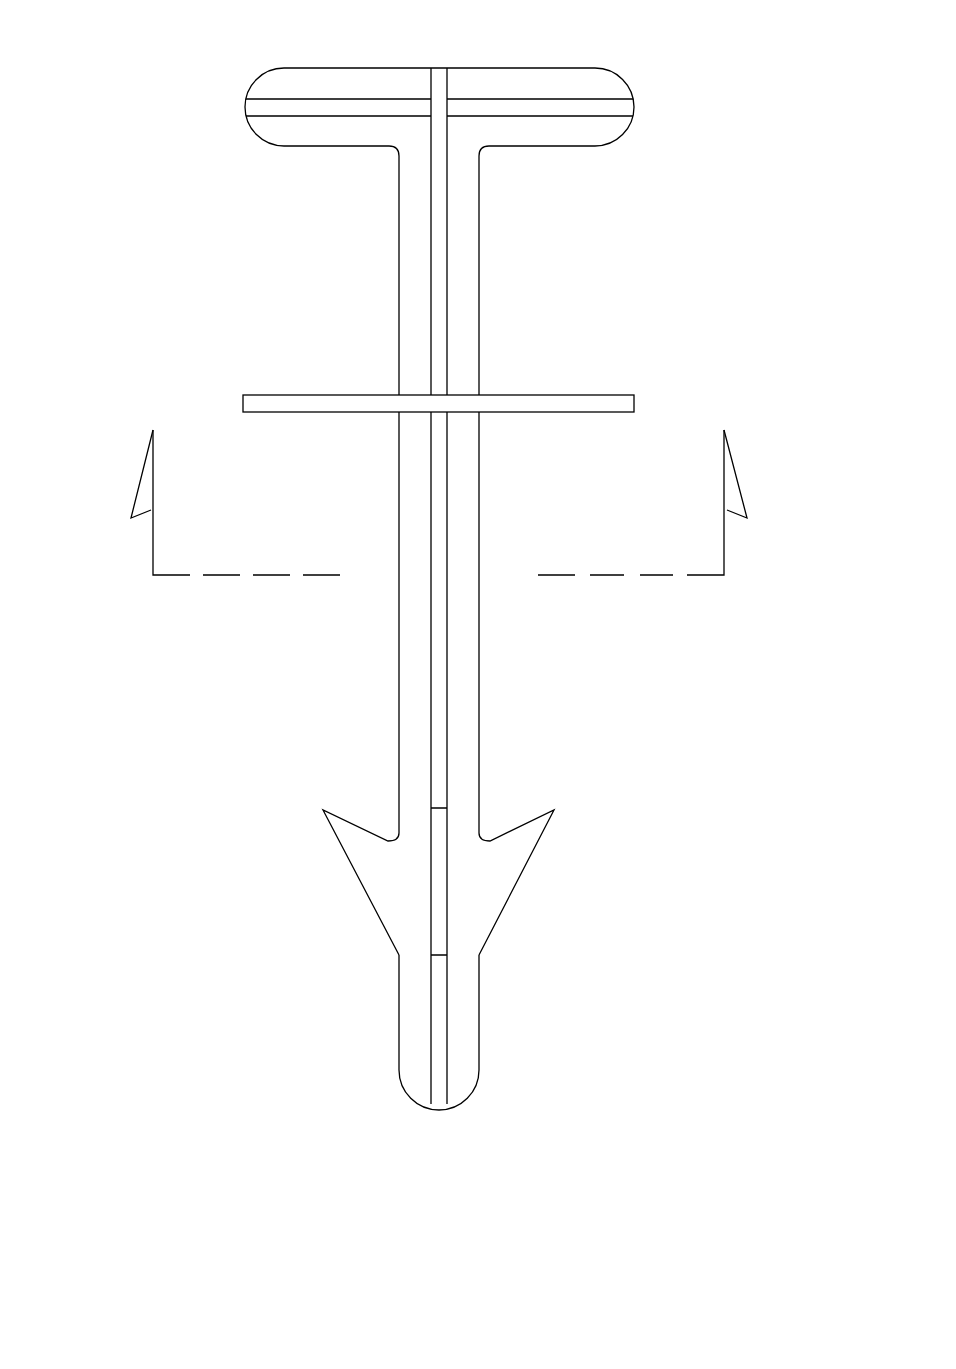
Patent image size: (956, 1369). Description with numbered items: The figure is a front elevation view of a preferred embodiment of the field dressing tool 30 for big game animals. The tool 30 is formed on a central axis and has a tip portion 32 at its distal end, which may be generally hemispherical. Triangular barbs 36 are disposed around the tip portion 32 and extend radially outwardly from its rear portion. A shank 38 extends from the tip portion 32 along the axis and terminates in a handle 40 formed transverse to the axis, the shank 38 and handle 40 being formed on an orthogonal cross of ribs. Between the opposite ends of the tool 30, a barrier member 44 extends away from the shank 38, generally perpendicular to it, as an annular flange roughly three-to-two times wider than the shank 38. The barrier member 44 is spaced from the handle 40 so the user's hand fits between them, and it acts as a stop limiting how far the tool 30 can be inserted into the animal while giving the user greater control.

The tool 30 is at (188, 662).
The tip portion 32 is at (386, 955).
The triangular barbs 36 is at (362, 878).
The shank 38 is at (478, 645).
The handle 40 is at (578, 67).
The barrier member 44 is at (260, 395).